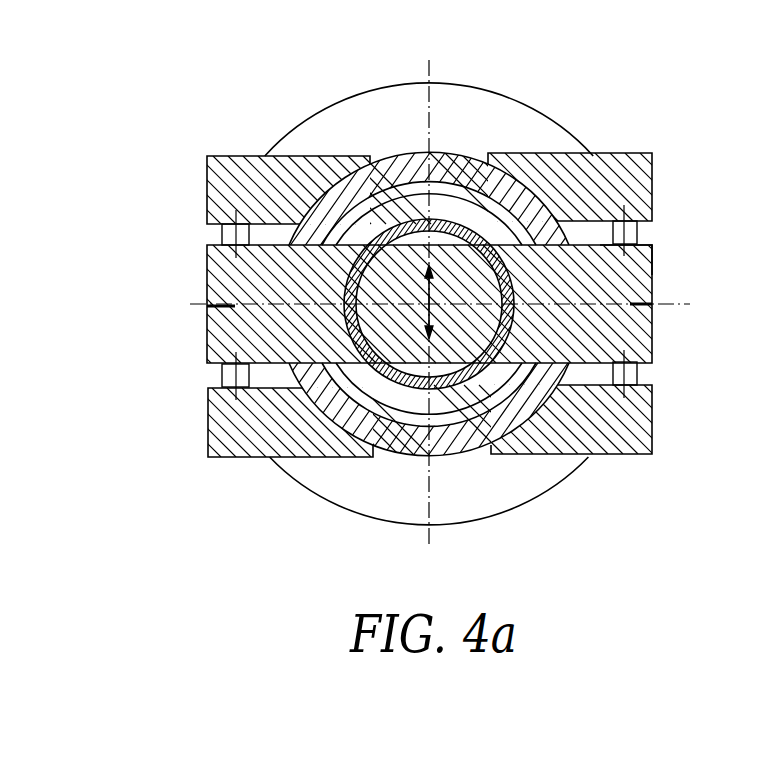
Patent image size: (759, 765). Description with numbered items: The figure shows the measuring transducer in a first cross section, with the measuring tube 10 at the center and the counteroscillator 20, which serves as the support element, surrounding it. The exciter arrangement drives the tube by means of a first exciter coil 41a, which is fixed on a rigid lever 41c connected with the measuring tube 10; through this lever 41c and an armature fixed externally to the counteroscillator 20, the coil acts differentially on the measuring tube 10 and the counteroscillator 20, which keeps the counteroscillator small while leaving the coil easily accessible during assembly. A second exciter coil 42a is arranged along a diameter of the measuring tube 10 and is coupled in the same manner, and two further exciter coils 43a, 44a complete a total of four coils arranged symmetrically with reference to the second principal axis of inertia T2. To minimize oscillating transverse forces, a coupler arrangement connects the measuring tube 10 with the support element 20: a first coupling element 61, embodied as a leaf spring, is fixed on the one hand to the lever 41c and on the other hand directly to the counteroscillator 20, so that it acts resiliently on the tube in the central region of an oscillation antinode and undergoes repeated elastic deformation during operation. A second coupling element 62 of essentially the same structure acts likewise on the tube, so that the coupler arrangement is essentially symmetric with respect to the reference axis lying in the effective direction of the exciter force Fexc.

The measuring tube 10 is at (452, 383).
The counteroscillator 20 is at (452, 152).
The first exciter coil 41a is at (637, 235).
The rigid lever 41c is at (640, 265).
The second exciter coil 42a is at (222, 237).
The exciter coil 43a is at (222, 378).
The exciter coil 44a is at (638, 372).
The first coupling element 61 is at (665, 290).
The second coupling element 62 is at (203, 313).
The second principal axis of inertia T2 is at (424, 34).
The exciter force Fexc is at (415, 323).